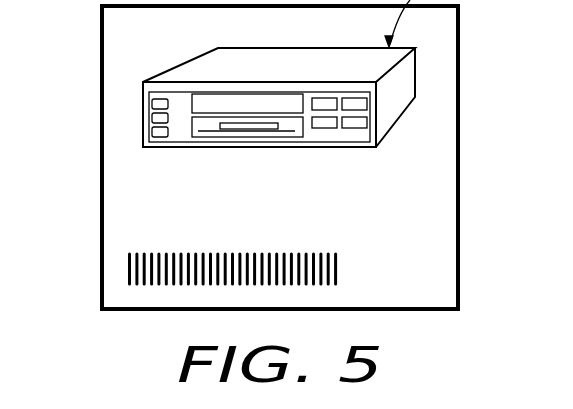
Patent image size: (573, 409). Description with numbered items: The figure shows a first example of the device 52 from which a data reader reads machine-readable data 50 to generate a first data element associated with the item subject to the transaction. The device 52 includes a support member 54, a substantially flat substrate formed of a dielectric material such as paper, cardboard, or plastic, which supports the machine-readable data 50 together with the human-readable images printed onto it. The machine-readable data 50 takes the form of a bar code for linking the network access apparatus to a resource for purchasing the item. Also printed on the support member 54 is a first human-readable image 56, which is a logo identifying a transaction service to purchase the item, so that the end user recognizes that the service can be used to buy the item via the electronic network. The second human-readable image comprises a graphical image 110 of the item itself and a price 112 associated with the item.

The machine-readable data 50 is at (128, 275).
The device 52 is at (147, 349).
The support member 54 is at (102, 17).
The first human-readable image 56 is at (436, 266).
The graphical image 110 is at (412, 75).
The price 112 is at (342, 202).